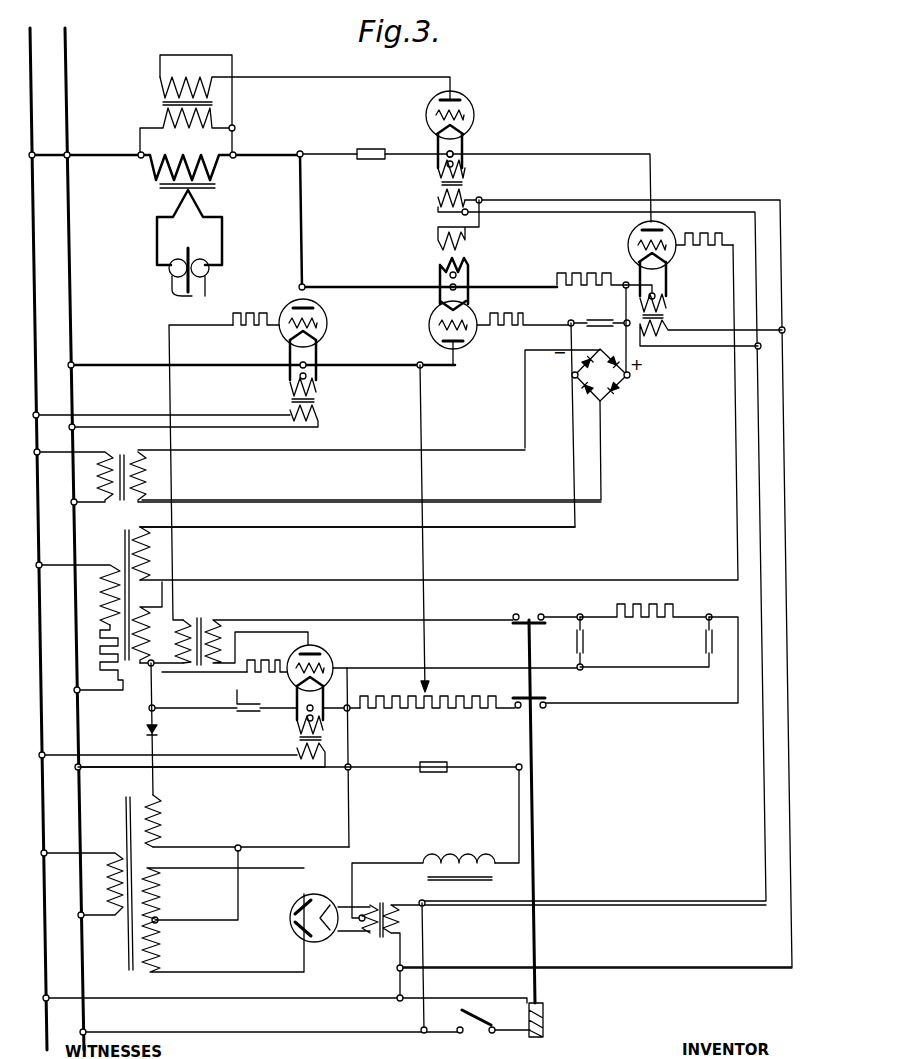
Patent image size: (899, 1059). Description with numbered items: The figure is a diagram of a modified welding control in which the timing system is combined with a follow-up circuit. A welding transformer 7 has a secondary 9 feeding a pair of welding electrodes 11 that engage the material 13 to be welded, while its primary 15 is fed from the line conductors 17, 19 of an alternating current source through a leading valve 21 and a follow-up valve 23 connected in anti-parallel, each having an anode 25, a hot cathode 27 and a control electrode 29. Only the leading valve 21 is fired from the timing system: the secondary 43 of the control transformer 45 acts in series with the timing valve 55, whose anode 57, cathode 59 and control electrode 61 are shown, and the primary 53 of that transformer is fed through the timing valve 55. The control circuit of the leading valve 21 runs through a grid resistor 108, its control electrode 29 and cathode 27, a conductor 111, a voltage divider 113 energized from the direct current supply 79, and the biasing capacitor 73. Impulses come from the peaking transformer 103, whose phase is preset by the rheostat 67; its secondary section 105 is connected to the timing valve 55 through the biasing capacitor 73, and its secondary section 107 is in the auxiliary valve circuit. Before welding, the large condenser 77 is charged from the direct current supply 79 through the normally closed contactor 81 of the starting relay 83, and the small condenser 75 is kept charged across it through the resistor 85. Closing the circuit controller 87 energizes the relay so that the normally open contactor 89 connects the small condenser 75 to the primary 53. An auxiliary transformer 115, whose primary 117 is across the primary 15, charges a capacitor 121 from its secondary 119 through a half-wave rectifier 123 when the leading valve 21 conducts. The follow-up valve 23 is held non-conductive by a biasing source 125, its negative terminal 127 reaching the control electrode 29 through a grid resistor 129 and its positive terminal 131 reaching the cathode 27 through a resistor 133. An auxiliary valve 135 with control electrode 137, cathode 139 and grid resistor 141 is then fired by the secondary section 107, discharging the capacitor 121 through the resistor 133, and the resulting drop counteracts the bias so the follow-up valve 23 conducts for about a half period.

The welding transformer 7 is at (245, 185).
The secondary 9 is at (204, 211).
The welding electrodes 11 is at (197, 294).
The material 13 is at (195, 246).
The primary 15 is at (203, 142).
The line conductor 17 is at (72, 250).
The line conductor 19 is at (36, 250).
The leading valve 21 is at (288, 309).
The follow-up valve 23 is at (432, 313).
The anode 25 is at (317, 300).
The hot cathode 27 is at (322, 338).
The control electrode 29 is at (320, 323).
The secondary 43 is at (185, 619).
The control transformer 45 is at (212, 618).
The primary 53 is at (222, 619).
The timing valve 55 is at (325, 651).
The anode 57 is at (286, 659).
The cathode 59 is at (292, 681).
The control electrode 61 is at (332, 665).
The rheostat 67 is at (115, 686).
The biasing capacitor 73 is at (233, 701).
The small condenser 75 is at (585, 641).
The large condenser 77 is at (705, 641).
The direct current supply 79 is at (452, 796).
The normally closed contactor 81 is at (546, 698).
The starting relay 83 is at (582, 1007).
The resistor 85 is at (665, 606).
The circuit controller 87 is at (462, 1033).
The normally open contactor 89 is at (522, 614).
The peaking transformer 103 is at (125, 533).
The secondary section 105 is at (148, 622).
The secondary section 107 is at (150, 567).
The grid resistor 108 is at (254, 332).
The conductor 111 is at (430, 416).
The voltage divider 113 is at (433, 710).
The auxiliary transformer 115 is at (146, 118).
The primary 117 is at (212, 118).
The secondary 119 is at (305, 81).
The capacitor 121 is at (376, 140).
The half-wave rectifier 123 is at (468, 100).
The biasing source 125 is at (601, 375).
The negative terminal 127 is at (571, 377).
The grid resistor 129 is at (495, 330).
The positive terminal 131 is at (632, 378).
The resistor 133 is at (602, 272).
The auxiliary valve 135 is at (630, 237).
The control electrode 137 is at (668, 248).
The cathode 139 is at (672, 263).
The grid resistor 141 is at (717, 234).